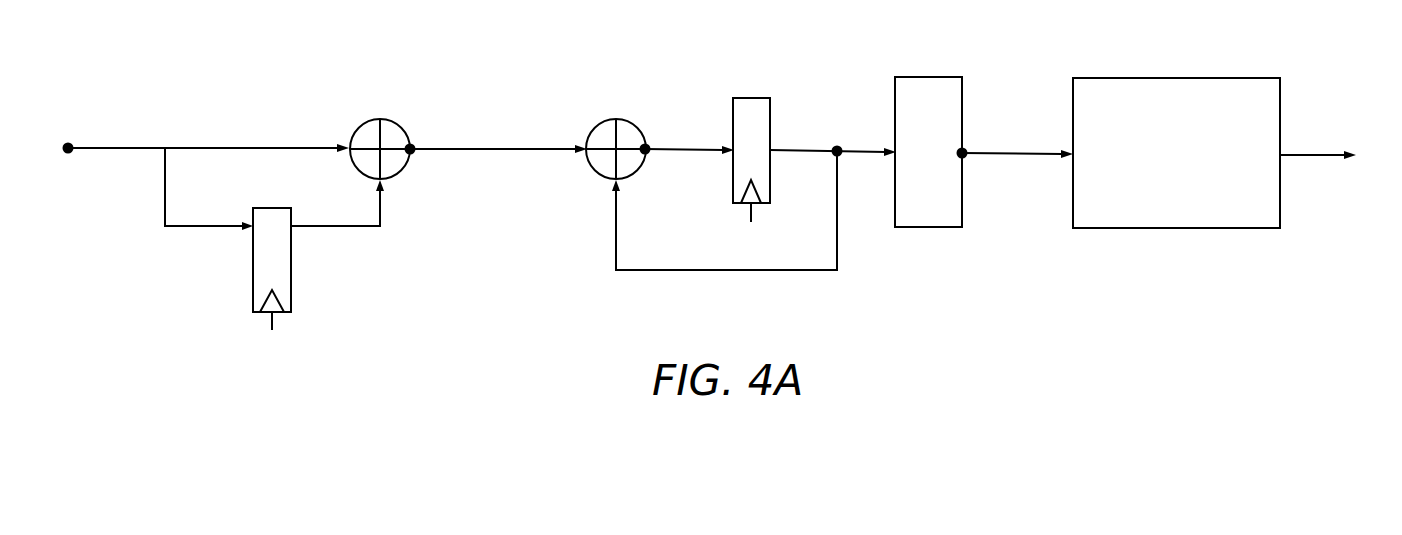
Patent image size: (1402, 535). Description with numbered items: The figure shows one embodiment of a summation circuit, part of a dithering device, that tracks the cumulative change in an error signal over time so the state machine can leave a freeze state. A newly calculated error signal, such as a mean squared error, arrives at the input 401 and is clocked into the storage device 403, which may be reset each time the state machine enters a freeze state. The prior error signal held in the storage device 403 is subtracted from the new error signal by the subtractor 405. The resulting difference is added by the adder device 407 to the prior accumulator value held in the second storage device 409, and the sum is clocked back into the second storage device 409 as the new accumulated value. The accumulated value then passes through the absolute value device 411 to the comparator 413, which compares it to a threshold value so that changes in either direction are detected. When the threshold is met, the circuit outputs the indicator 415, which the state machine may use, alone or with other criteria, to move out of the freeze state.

The input 401 is at (100, 146).
The storage device 403 is at (275, 208).
The subtractor 405 is at (396, 121).
The adder device 407 is at (627, 121).
The second storage device 409 is at (766, 98).
The absolute value device 411 is at (948, 77).
The comparator 413 is at (1236, 78).
The indicator 415 is at (1310, 155).